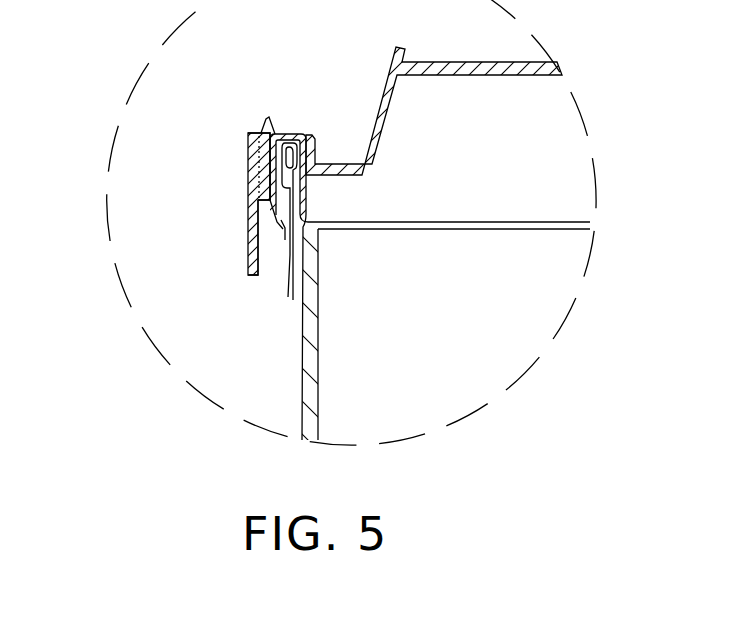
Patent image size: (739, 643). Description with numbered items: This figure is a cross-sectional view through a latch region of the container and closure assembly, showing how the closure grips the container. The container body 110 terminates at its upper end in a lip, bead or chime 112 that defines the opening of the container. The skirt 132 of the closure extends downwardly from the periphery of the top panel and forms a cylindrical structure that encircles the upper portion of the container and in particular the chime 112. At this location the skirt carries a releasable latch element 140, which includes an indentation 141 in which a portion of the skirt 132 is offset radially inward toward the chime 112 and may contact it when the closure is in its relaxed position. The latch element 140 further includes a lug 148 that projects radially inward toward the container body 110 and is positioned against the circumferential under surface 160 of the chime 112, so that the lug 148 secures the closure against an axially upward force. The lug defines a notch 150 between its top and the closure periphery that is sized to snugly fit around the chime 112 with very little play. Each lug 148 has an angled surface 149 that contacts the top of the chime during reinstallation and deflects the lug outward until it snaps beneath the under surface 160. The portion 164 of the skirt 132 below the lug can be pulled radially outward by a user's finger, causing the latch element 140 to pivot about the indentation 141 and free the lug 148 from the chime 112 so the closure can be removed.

The body 110 is at (309, 322).
The chime 112 is at (304, 133).
The skirt 132 is at (248, 243).
The latch element 140 is at (248, 161).
The indentation 141 is at (248, 171).
The lug 148 is at (285, 240).
The angled surface 149 is at (288, 297).
The notch 150 is at (284, 133).
The under surface 160 is at (295, 191).
The portion 164 is at (214, 219).